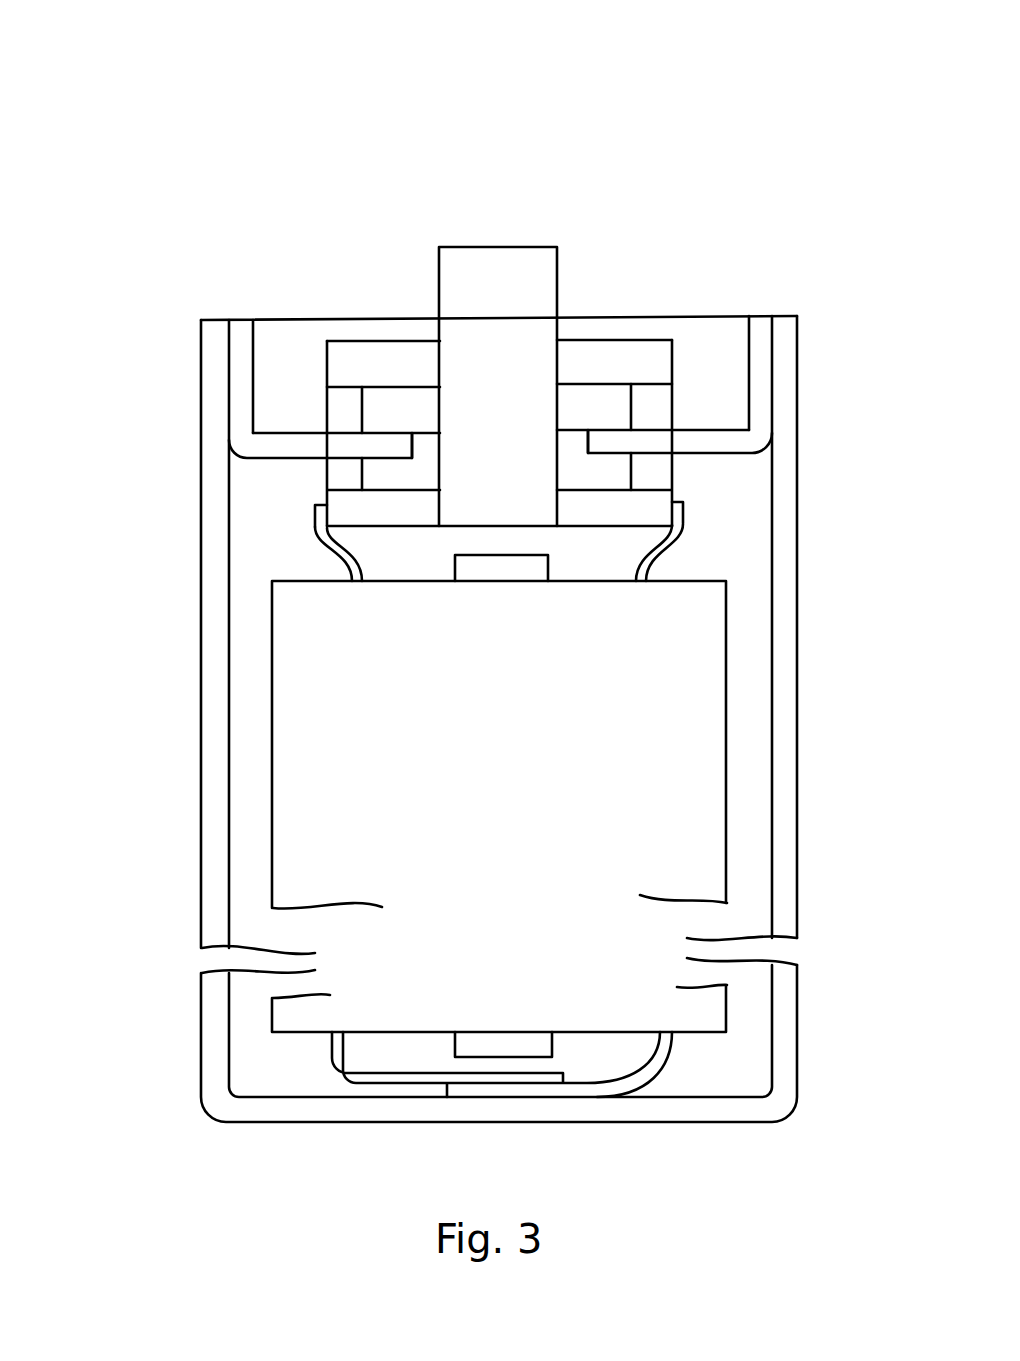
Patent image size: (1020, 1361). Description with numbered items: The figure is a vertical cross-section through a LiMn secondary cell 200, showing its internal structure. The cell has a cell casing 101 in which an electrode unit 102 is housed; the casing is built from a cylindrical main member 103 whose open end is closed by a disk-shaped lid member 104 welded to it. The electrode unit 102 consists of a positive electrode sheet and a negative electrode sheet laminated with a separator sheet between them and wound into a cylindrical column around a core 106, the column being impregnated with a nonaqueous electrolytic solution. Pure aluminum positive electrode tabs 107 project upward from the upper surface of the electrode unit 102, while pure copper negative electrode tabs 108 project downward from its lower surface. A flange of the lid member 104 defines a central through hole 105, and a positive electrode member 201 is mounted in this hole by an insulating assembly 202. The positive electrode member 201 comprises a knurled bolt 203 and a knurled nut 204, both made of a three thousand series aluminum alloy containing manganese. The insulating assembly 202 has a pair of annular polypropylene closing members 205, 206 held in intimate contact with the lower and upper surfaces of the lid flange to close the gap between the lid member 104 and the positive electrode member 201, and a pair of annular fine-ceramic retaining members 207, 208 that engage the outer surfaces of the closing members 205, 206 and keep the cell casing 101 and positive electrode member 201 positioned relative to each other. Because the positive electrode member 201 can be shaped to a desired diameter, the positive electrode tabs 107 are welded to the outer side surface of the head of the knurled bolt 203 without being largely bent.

The LiMn secondary cell 200 is at (757, 52).
The cell casing 101 is at (845, 210).
The cylindrical main member 103 is at (782, 330).
The lid member 104 is at (757, 335).
The positive electrode member 201 is at (640, 90).
The knurled bolt 203 is at (476, 247).
The knurled nut 204 is at (582, 352).
The insulating assembly 202 is at (97, 392).
The closing member 205 is at (390, 482).
The closing member 206 is at (378, 395).
The retaining member 207 is at (327, 478).
The retaining member 208 is at (325, 410).
The through hole 105 is at (410, 450).
The positive electrode tabs 107 is at (683, 520).
The electrode unit 102 is at (727, 730).
The core 106 is at (548, 1042).
The negative electrode tabs 108 is at (348, 1082).